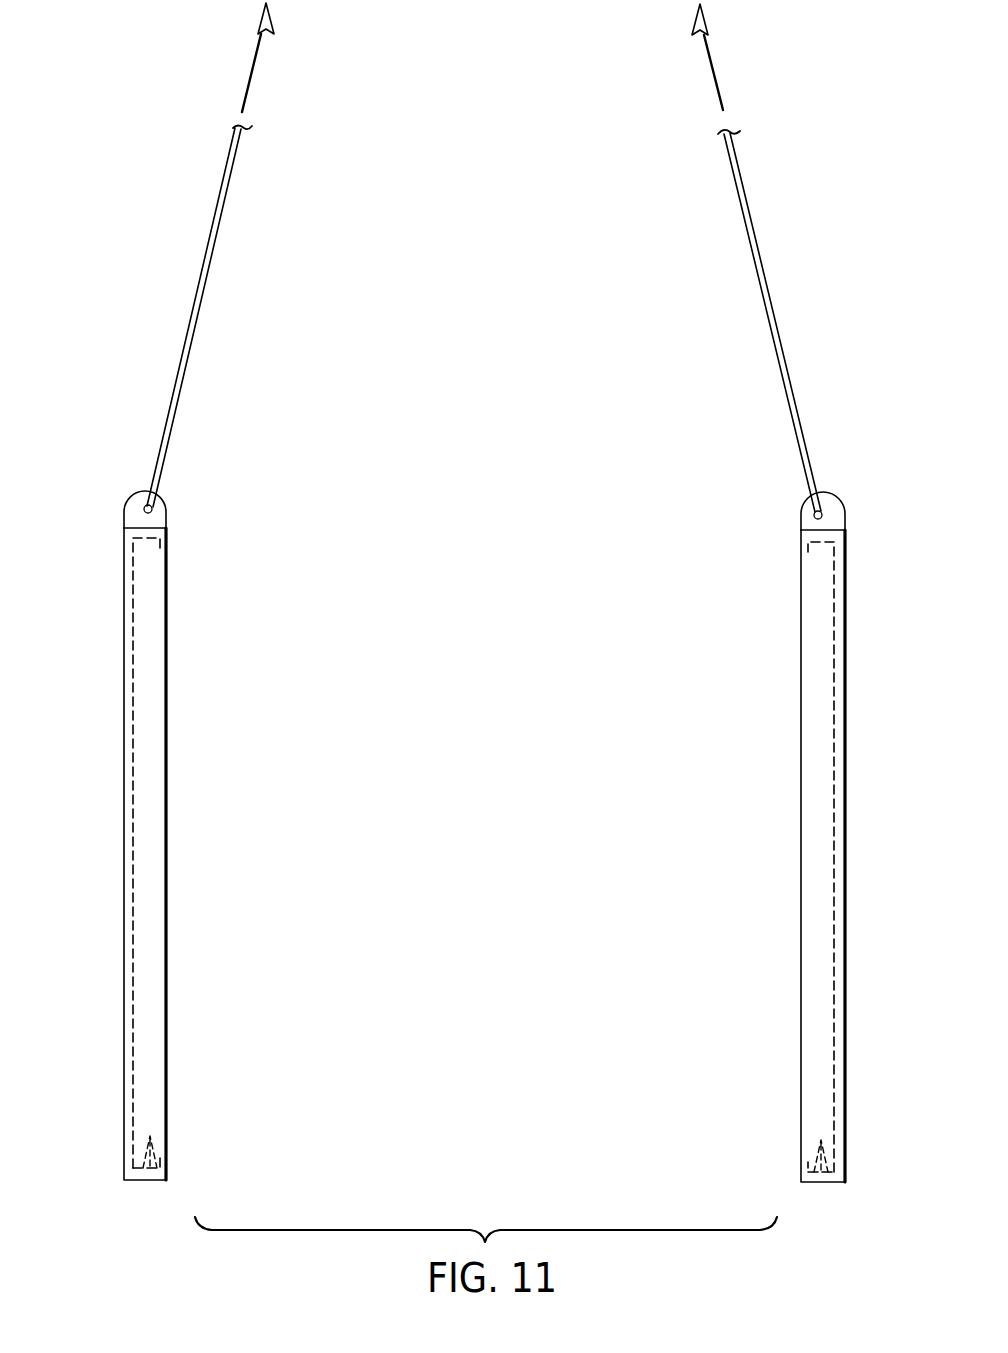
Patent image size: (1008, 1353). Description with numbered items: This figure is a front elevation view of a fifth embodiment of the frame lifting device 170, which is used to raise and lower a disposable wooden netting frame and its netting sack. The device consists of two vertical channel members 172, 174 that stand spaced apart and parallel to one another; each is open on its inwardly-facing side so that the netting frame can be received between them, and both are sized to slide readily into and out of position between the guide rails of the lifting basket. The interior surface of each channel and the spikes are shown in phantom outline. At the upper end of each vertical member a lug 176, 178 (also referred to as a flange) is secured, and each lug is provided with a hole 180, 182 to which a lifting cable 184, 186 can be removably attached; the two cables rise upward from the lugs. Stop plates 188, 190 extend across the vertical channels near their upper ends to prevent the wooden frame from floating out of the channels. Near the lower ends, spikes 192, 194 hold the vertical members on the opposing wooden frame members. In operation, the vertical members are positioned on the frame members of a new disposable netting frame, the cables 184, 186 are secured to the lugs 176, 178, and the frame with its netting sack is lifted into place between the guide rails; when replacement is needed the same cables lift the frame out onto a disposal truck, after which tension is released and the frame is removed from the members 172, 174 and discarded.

The frame lifting device 170 is at (445, 292).
The vertical channel member 172 is at (168, 722).
The vertical channel member 174 is at (801, 797).
The lug 176 is at (140, 489).
The lug 178 is at (834, 492).
The hole 180 is at (141, 510).
The hole 182 is at (808, 516).
The lifting cable 184 is at (203, 263).
The lifting cable 186 is at (764, 278).
The stop plate 188 is at (147, 540).
The stop plate 190 is at (818, 548).
The spike 192 is at (158, 1147).
The spike 194 is at (823, 1140).